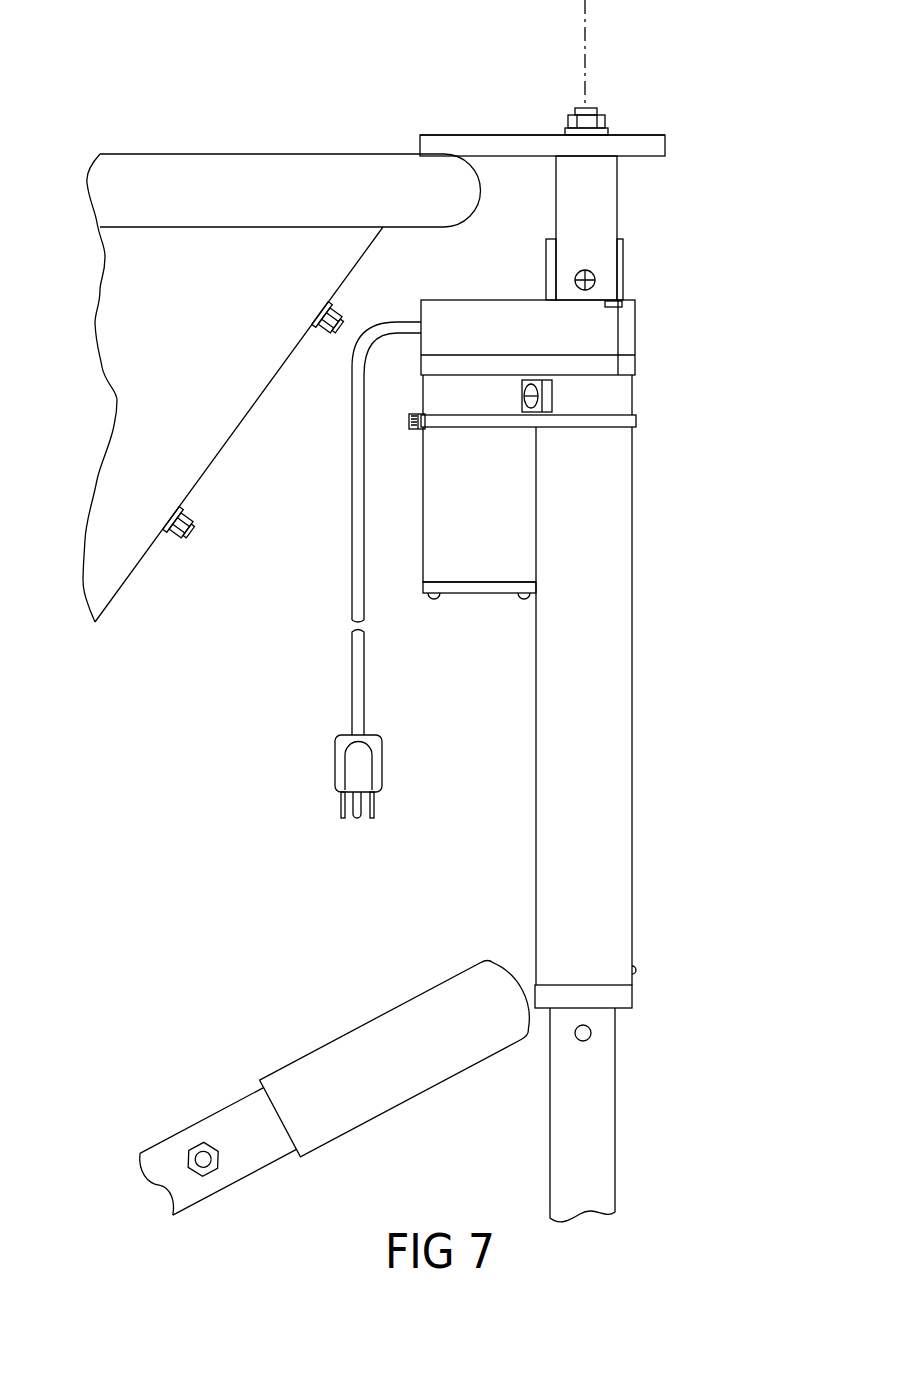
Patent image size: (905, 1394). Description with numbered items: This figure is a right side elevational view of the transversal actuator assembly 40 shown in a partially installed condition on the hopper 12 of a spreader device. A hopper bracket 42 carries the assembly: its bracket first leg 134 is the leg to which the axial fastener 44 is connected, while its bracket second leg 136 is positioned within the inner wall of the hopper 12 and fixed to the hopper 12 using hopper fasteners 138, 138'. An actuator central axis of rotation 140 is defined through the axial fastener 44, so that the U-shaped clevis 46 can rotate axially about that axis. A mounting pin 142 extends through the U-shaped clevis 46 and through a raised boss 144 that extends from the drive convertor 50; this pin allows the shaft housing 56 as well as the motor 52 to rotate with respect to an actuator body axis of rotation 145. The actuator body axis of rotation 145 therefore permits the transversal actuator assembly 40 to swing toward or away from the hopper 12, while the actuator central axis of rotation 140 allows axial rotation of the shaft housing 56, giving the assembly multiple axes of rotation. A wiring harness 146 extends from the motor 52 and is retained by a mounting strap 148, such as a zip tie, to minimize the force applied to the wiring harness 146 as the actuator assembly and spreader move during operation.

The hopper 12 is at (282, 363).
The transversal actuator assembly 40 is at (516, 611).
The hopper bracket 42 is at (667, 146).
The axial fastener 44 is at (596, 108).
The U-shaped clevis 46 is at (617, 190).
The drive convertor 50 is at (628, 332).
The motor 52 is at (455, 515).
The shaft housing 56 is at (618, 808).
The bracket first leg 134 is at (500, 142).
The bracket second leg 136 is at (417, 152).
The hopper fastener 138 is at (381, 298).
The hopper fastener 138' is at (209, 544).
The actuator central axis of rotation 140 is at (526, 33).
The mounting pin 142 is at (598, 292).
The raised boss 144 is at (623, 242).
The actuator body axis of rotation 145 is at (594, 273).
The wiring harness 146 is at (340, 768).
The mounting strap 148 is at (410, 423).